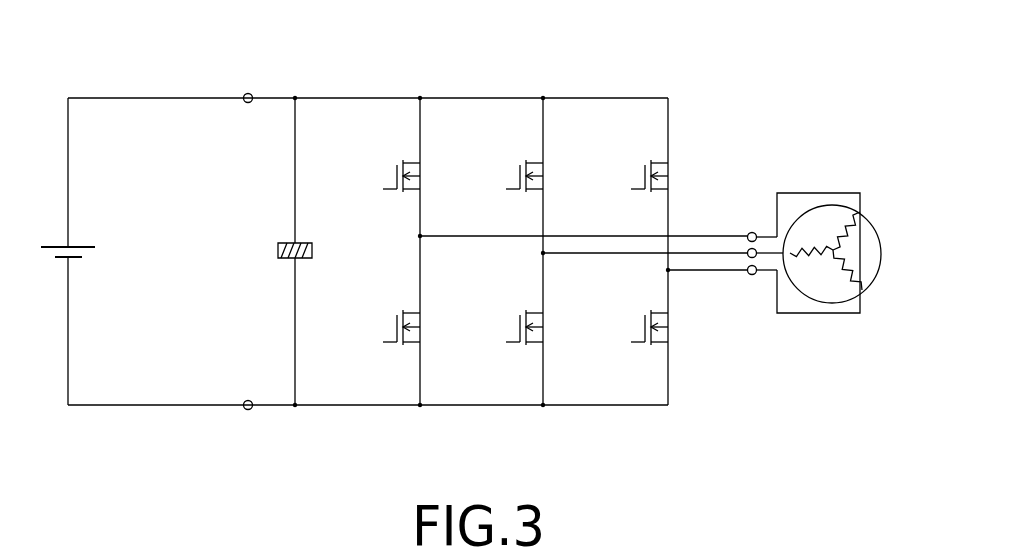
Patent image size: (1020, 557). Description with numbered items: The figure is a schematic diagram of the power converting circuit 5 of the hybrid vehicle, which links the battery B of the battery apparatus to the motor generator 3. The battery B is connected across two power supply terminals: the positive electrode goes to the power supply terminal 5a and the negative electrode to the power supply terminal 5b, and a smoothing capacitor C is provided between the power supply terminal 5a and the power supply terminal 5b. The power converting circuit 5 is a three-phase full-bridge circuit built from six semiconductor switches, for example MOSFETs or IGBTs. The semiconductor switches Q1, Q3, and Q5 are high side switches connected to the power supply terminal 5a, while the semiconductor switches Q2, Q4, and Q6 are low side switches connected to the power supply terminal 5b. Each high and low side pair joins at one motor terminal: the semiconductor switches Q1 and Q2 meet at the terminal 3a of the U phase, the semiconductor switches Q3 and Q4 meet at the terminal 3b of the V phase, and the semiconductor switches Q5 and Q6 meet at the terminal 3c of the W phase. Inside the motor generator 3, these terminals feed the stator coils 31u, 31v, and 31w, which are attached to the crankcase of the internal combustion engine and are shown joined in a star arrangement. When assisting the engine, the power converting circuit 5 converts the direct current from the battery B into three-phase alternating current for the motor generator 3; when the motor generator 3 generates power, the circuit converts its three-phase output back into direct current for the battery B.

The power converting circuit 5 is at (680, 90).
The power supply terminal 5a is at (248, 103).
The power supply terminal 5b is at (248, 410).
The battery B is at (56, 251).
The smoothing capacitor C is at (308, 253).
The semiconductor switch Q1 is at (387, 165).
The semiconductor switch Q2 is at (387, 316).
The semiconductor switch Q3 is at (512, 165).
The semiconductor switch Q4 is at (512, 316).
The semiconductor switch Q5 is at (636, 165).
The semiconductor switch Q6 is at (636, 316).
The motor generator 3 is at (851, 258).
The terminal 3a is at (750, 233).
The terminal 3b is at (753, 248).
The terminal 3c is at (751, 275).
The stator coil 31u is at (856, 228).
The stator coil 31v is at (805, 248).
The stator coil 31w is at (861, 276).